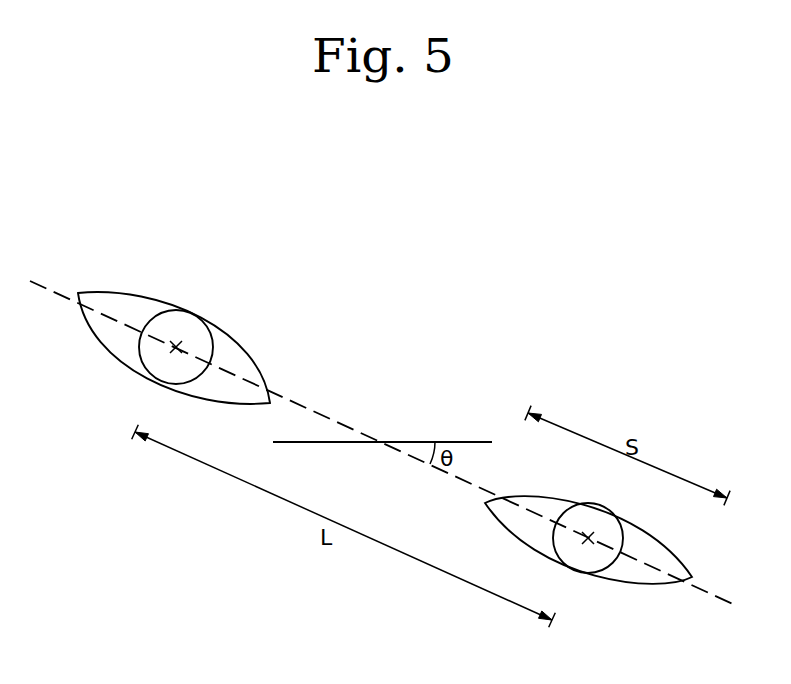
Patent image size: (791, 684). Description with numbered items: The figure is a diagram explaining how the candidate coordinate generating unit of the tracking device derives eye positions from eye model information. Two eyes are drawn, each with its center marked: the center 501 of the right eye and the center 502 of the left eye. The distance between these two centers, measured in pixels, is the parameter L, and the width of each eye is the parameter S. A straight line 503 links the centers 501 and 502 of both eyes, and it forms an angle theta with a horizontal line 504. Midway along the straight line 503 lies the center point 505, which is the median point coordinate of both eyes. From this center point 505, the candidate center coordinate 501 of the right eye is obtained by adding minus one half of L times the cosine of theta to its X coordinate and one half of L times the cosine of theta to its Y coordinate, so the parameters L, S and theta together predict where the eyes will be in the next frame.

The center of the right eye 501 is at (177, 345).
The center of the left eye 502 is at (589, 541).
The straight line linking the centers of both eyes 503 is at (717, 595).
The horizontal line 504 is at (320, 444).
The center point 505 is at (384, 442).